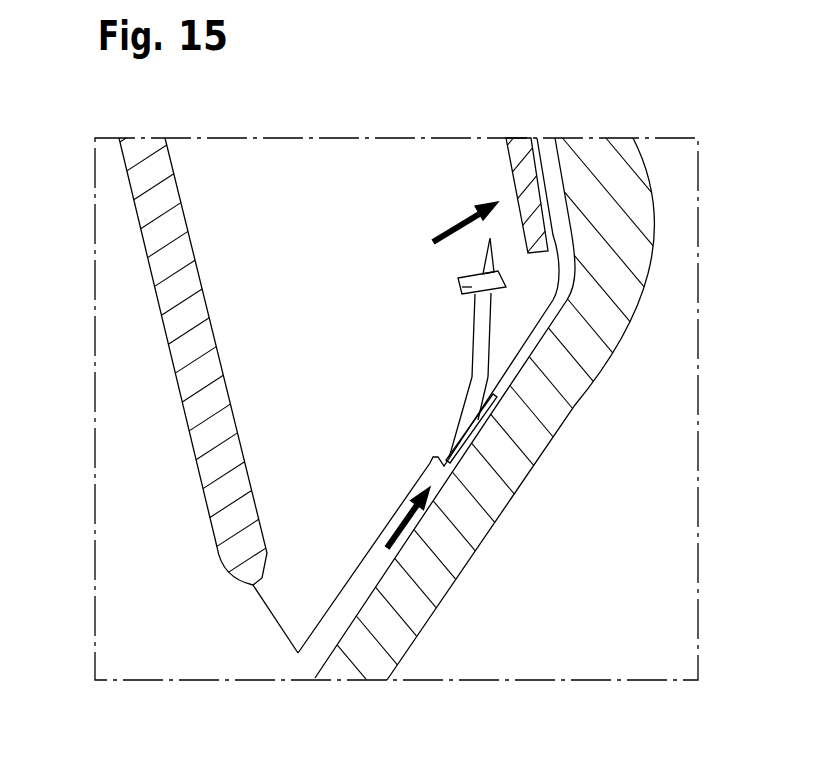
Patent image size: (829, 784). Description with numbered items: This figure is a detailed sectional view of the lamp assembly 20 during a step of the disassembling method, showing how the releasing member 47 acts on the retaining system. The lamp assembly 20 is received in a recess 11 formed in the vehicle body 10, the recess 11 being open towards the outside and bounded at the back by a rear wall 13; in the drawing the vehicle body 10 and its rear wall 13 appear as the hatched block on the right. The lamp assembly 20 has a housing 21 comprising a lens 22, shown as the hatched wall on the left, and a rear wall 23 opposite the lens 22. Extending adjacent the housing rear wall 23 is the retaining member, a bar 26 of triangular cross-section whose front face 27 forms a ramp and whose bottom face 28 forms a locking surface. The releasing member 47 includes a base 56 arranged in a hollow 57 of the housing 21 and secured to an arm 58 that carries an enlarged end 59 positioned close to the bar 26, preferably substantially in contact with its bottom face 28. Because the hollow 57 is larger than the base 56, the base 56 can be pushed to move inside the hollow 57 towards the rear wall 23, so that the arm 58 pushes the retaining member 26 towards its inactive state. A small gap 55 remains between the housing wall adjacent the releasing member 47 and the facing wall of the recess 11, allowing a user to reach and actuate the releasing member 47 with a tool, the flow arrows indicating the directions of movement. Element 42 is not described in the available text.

The vehicle body 10 is at (495, 429).
The recess 11 is at (383, 633).
The rear wall 13 is at (541, 428).
The lamp assembly 20 is at (155, 432).
The housing 21 is at (253, 620).
The lens 22 is at (173, 288).
The rear wall 23 is at (550, 170).
The bar 26 is at (490, 258).
The front face 27 is at (490, 258).
The bottom face 28 is at (498, 290).
The guide strip 42 is at (520, 145).
The releasing member 47 is at (450, 405).
The gap 55 is at (320, 650).
The base 56 is at (463, 460).
The hollow 57 is at (490, 405).
The arm 58 is at (482, 327).
The enlarged end 59 is at (450, 288).